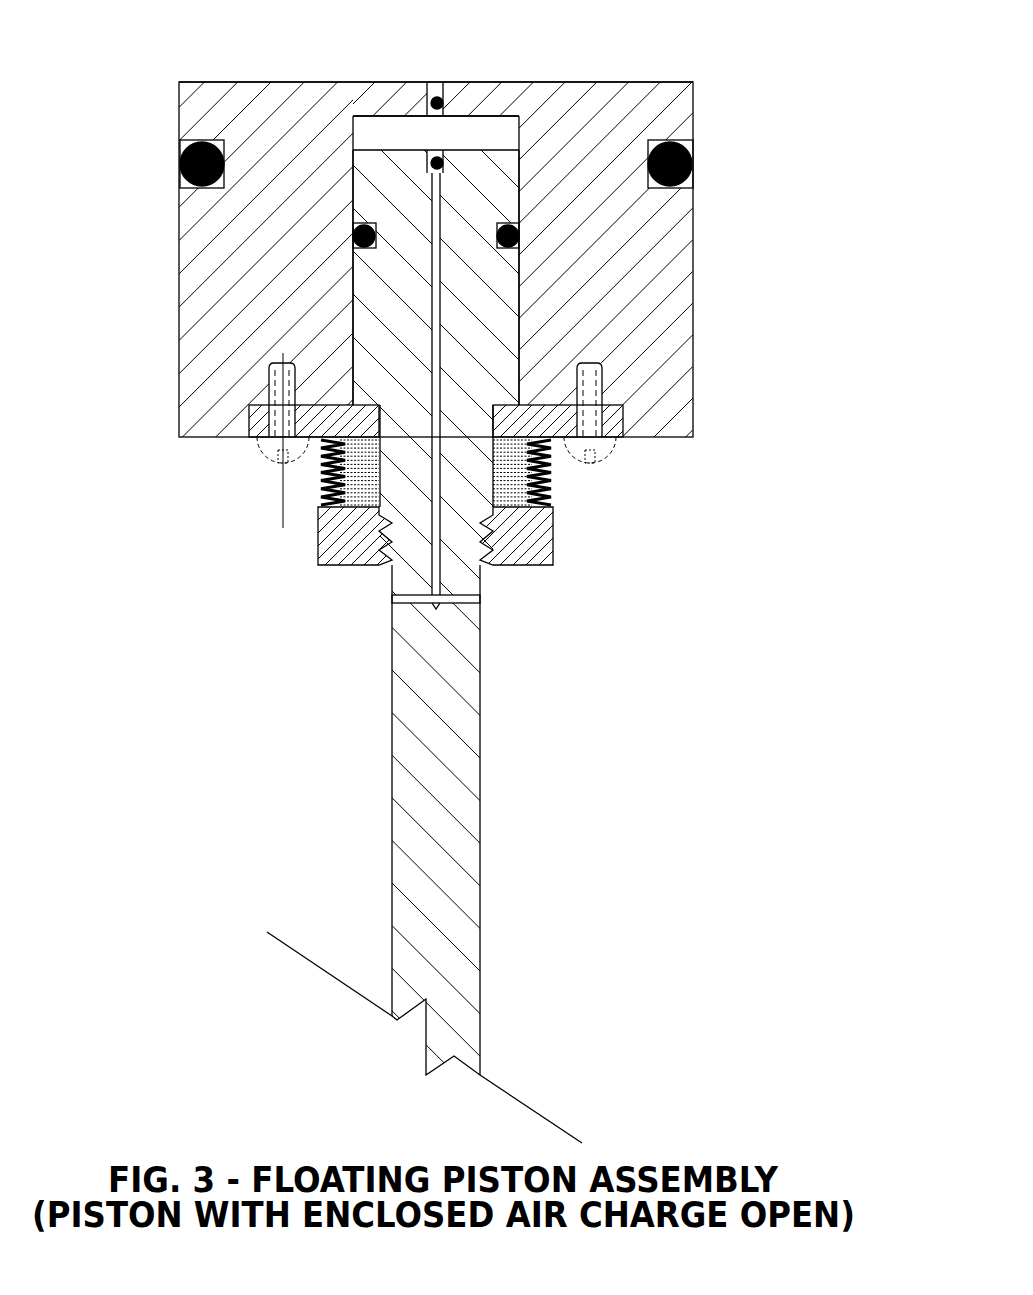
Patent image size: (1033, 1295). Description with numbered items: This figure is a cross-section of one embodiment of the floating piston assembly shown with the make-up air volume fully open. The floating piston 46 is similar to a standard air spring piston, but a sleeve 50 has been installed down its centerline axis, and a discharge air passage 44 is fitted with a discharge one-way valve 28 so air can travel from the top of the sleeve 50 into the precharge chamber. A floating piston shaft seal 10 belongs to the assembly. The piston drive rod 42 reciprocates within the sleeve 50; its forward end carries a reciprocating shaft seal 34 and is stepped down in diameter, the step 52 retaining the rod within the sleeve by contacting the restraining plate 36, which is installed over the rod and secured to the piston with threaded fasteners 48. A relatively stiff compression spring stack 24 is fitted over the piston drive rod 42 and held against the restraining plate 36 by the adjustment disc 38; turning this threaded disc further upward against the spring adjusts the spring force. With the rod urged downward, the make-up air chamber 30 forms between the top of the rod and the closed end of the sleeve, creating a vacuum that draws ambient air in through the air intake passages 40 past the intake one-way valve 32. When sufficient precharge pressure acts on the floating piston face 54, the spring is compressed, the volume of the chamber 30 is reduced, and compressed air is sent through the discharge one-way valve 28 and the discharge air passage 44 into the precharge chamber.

The floating piston shaft seal 10 is at (181, 137).
The compression spring stack 24 is at (320, 487).
The discharge one-way valve 28 is at (443, 104).
The make-up air chamber 30 is at (455, 133).
The intake one-way valve 32 is at (440, 160).
The reciprocating shaft seal 34 is at (519, 243).
The restraining plate 36 is at (545, 418).
The adjustment disc 38 is at (490, 530).
The air intake passages 40 is at (440, 598).
The piston drive rod 42 is at (445, 744).
The discharge air passage 44 is at (437, 82).
The floating piston 46 is at (285, 307).
The threaded fastener 48 is at (262, 455).
The sleeve 50 is at (353, 378).
The step 52 is at (353, 392).
The floating piston face 54 is at (247, 82).